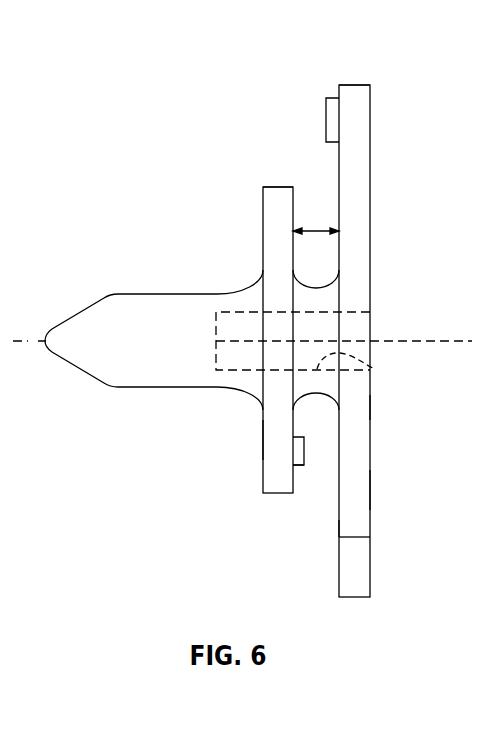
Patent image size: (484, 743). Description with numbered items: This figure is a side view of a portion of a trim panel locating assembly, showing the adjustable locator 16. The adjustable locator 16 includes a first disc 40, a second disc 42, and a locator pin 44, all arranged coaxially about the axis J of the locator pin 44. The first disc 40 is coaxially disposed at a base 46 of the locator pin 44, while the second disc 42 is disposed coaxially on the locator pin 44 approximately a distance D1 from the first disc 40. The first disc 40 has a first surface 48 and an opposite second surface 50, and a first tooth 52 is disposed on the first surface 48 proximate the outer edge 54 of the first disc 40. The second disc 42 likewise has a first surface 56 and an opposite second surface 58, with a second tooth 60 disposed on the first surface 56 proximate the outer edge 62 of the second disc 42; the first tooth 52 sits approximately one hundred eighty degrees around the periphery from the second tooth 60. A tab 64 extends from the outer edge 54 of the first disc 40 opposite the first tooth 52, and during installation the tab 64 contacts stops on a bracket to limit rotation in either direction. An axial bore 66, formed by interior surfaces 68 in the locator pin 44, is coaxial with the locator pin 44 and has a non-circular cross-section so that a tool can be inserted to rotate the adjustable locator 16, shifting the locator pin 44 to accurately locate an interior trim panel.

The adjustable locator 16 is at (390, 111).
The first disc 40 is at (370, 175).
The second disc 42 is at (262, 212).
The locator pin 44 is at (155, 292).
The base 46 is at (370, 405).
The first surface 48 is at (338, 525).
The second surface 50 is at (370, 490).
The first tooth 52 is at (331, 98).
The outer edge 54 is at (352, 85).
The first surface 56 is at (293, 423).
The second surface 58 is at (262, 438).
The second tooth 60 is at (297, 466).
The outer edge 62 is at (279, 187).
The tab 64 is at (370, 567).
The axial bore 66 is at (375, 369).
The interior surfaces 68 is at (352, 313).
The distance D1 is at (322, 226).
The axis J is at (435, 340).